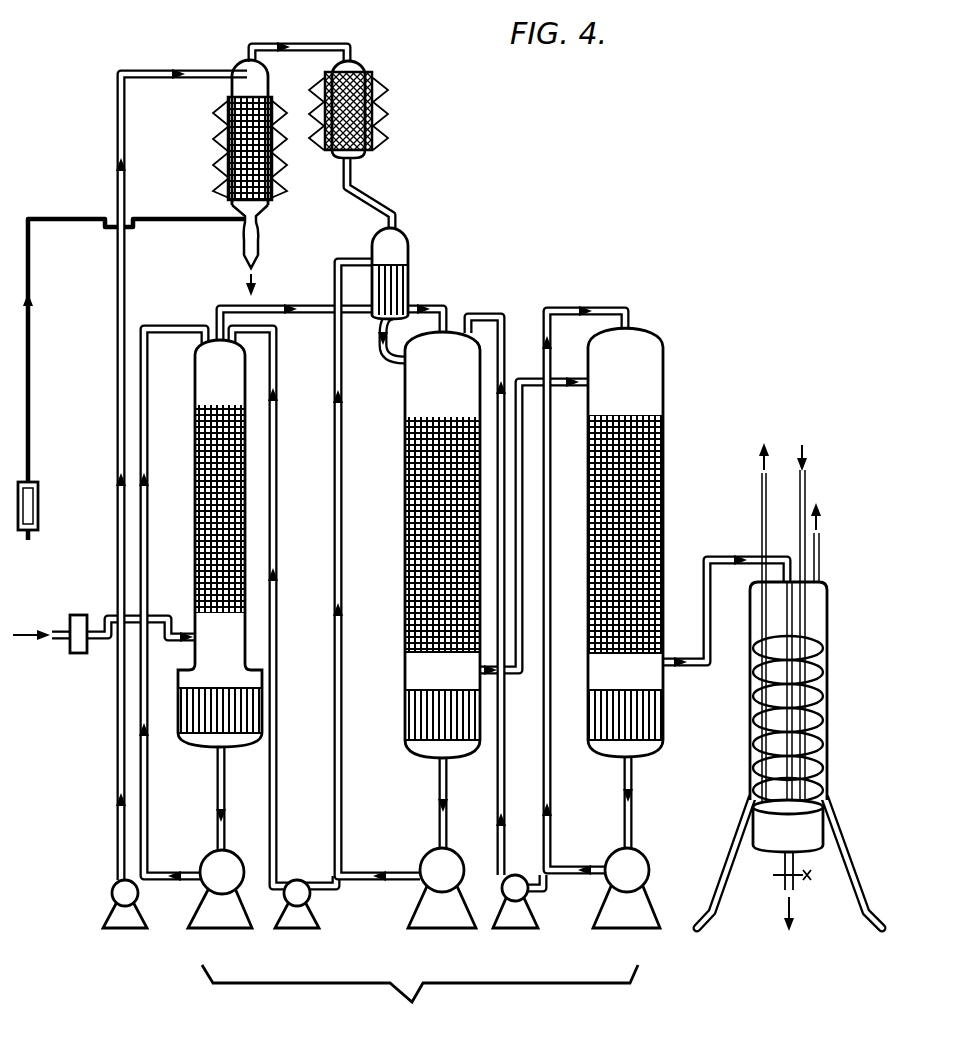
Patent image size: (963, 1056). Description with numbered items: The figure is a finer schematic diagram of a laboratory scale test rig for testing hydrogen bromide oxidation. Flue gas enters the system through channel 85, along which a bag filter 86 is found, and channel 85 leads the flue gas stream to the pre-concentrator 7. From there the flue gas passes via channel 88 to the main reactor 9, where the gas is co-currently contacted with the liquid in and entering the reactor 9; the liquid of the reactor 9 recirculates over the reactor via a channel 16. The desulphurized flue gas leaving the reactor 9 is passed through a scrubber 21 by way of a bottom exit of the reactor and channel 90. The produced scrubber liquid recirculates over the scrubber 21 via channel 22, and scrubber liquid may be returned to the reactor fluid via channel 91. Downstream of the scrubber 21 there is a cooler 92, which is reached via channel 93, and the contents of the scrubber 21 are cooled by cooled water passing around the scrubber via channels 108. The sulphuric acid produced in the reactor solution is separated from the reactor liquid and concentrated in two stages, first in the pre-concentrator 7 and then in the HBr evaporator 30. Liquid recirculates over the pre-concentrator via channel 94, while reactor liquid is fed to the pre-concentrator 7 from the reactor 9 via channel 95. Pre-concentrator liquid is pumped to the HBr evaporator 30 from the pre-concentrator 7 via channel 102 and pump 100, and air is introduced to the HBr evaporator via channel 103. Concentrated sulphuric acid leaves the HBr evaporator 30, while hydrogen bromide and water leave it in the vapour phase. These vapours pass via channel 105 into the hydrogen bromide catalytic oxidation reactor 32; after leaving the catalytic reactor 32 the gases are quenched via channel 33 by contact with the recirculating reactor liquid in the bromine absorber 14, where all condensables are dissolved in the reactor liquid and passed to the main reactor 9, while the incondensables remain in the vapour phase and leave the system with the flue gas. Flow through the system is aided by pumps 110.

The pre-concentrator 7 is at (193, 450).
The main reactor 9 is at (405, 513).
The bromine absorber 14 is at (402, 230).
The channel 16 is at (333, 477).
The scrubber 21 is at (666, 347).
The channel 22 is at (558, 306).
The HBr evaporator 30 is at (233, 62).
The hydrogen bromide catalytic oxidation reactor 32 is at (363, 62).
The channel 33 is at (370, 193).
The channel 85 is at (110, 612).
The bag filter 86 is at (78, 657).
The channel 88 is at (303, 302).
The channel 90 is at (531, 378).
The channel 91 is at (490, 312).
The cooler 92 is at (750, 725).
The channel 93 is at (703, 560).
The channel 94 is at (140, 402).
The channel 95 is at (273, 407).
The pump 100 is at (115, 930).
The channel 102 is at (115, 88).
The channel 103 is at (50, 217).
The channel 105 is at (305, 42).
The channels 108 is at (803, 480).
The pumps 110 is at (424, 943).